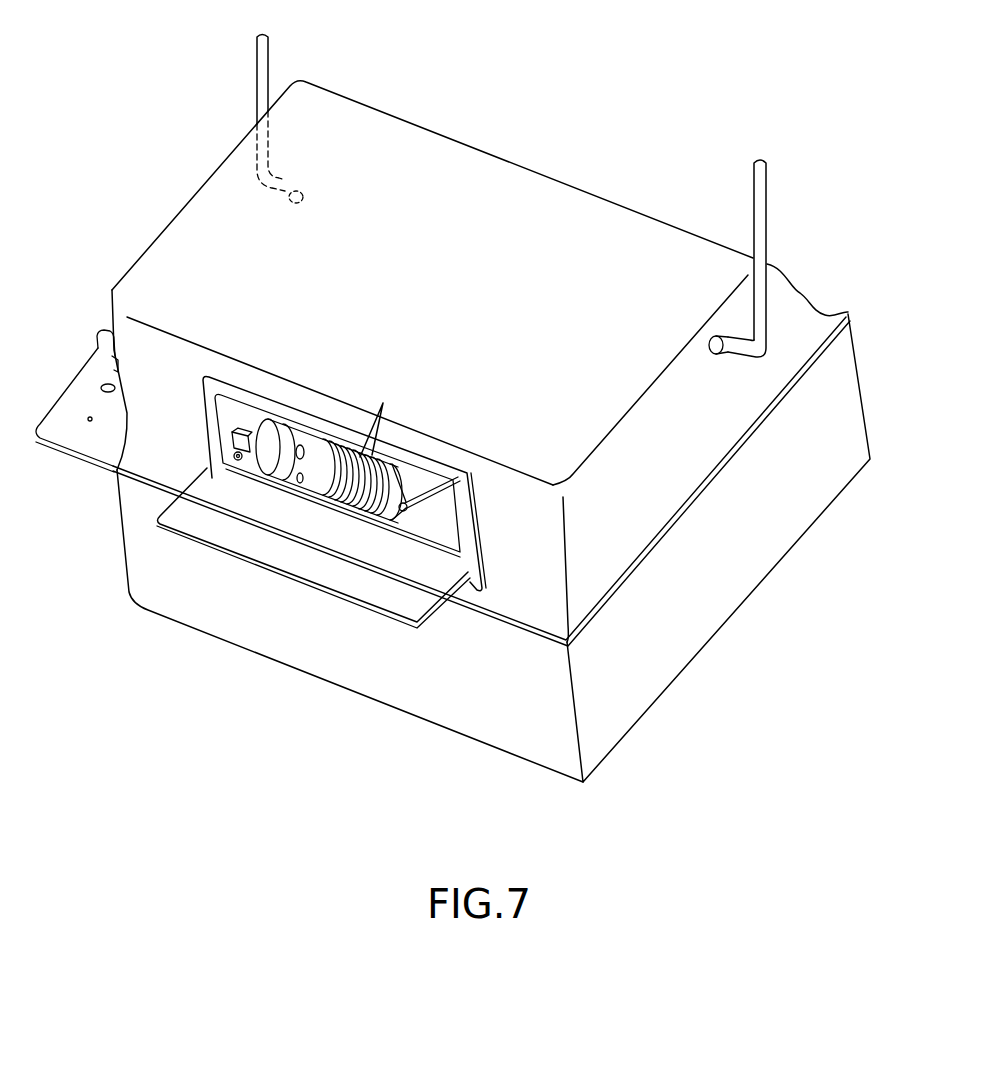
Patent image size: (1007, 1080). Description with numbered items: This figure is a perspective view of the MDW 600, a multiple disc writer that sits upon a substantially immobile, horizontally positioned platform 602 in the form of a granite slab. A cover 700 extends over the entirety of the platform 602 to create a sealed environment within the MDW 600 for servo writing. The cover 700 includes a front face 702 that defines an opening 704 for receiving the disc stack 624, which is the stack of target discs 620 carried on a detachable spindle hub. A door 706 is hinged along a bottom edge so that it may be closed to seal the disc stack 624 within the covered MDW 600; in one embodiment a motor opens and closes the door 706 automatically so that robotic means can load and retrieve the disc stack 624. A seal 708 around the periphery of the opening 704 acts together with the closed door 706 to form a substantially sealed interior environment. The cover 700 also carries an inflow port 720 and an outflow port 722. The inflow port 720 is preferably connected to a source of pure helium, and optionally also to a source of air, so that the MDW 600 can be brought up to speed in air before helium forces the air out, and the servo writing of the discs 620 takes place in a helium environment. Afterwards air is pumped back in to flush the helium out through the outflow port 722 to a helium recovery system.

The MDW 600 is at (282, 704).
The platform 602 is at (655, 688).
The target discs 620 is at (398, 422).
The disc stack 624 is at (390, 470).
The cover 700 is at (462, 355).
The front face 702 is at (558, 560).
The opening 704 is at (225, 438).
The door 706 is at (418, 598).
The seal 708 is at (460, 513).
The inflow port 720 is at (290, 190).
The outflow port 722 is at (712, 353).